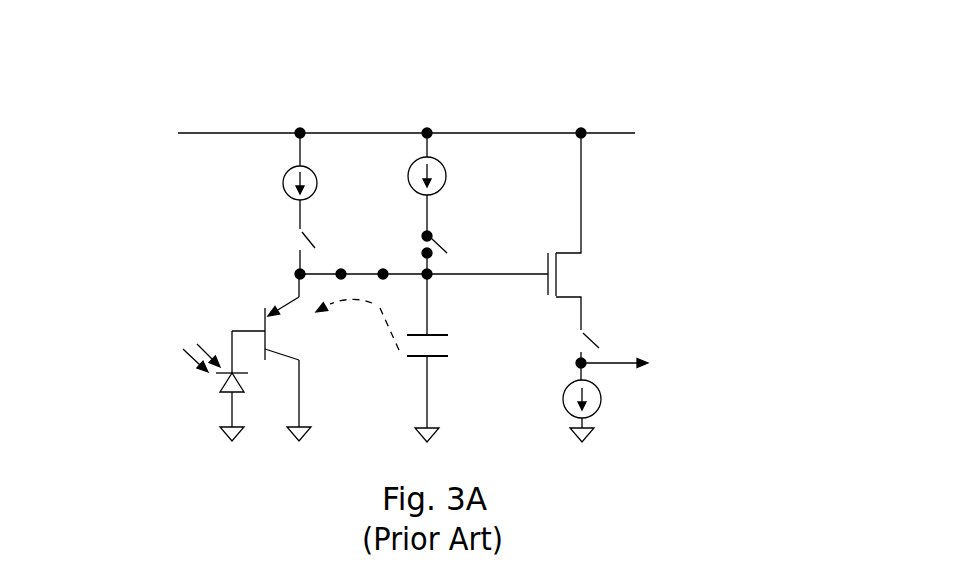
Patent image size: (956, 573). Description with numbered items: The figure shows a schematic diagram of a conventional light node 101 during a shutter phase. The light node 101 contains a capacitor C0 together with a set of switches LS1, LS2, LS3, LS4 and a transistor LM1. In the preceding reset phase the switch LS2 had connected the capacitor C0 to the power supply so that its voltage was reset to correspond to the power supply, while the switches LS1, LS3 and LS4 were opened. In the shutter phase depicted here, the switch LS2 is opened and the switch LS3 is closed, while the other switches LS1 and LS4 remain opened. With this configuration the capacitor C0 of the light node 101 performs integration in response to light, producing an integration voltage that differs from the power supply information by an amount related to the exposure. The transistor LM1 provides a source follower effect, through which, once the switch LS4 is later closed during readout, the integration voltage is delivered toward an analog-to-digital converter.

The light node 101 is at (694, 98).
The switch LS1 is at (280, 242).
The switch LS2 is at (478, 234).
The switch LS3 is at (365, 298).
The switch LS4 is at (606, 324).
The transistor LM1 is at (600, 266).
The capacitor C0 is at (446, 360).